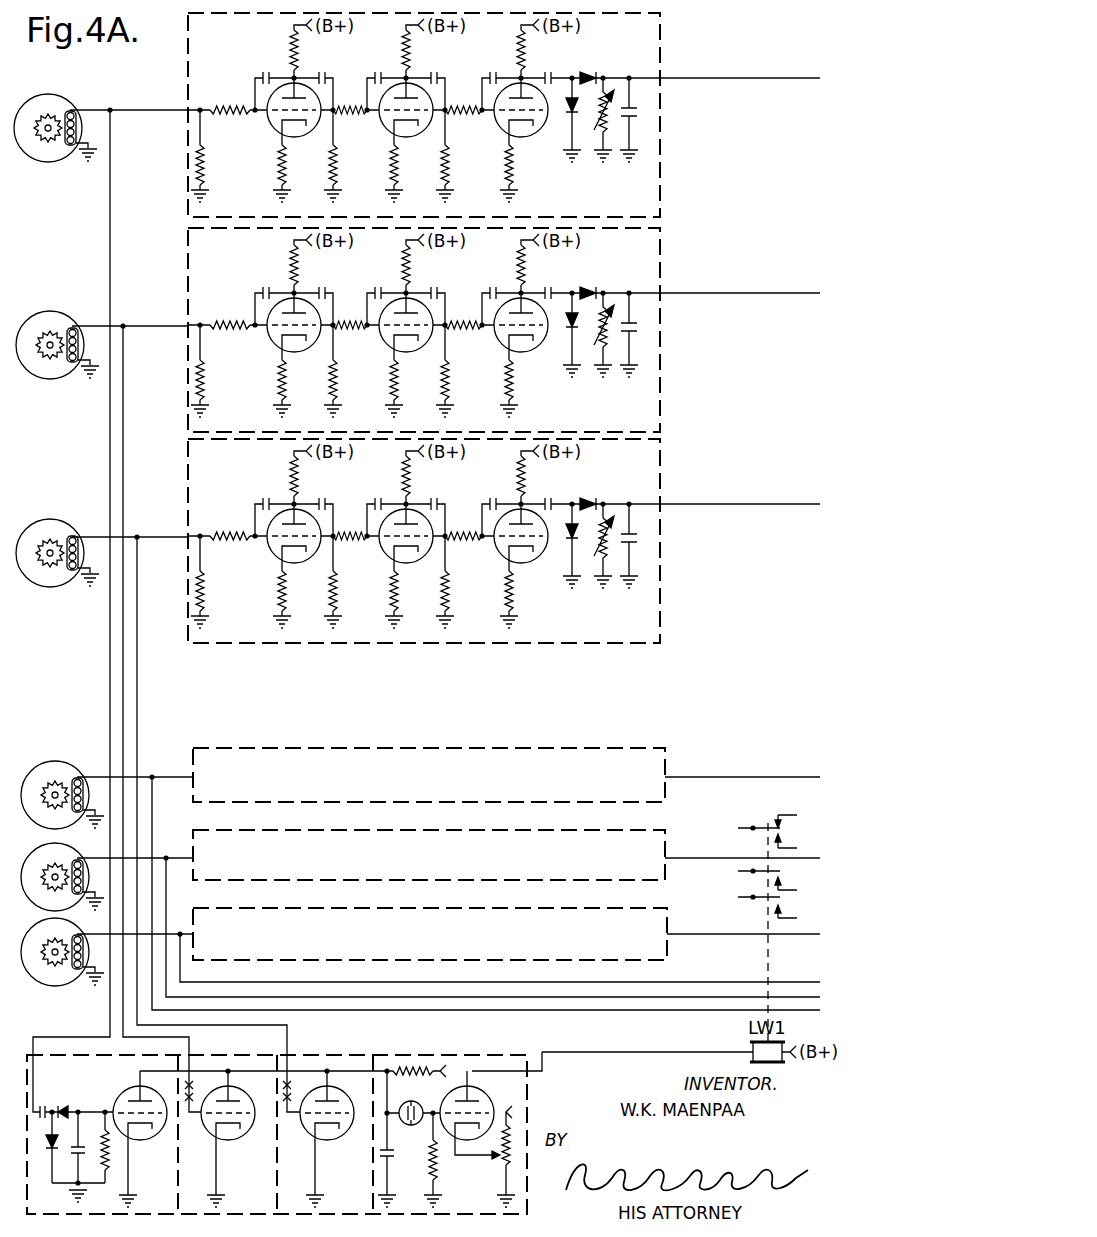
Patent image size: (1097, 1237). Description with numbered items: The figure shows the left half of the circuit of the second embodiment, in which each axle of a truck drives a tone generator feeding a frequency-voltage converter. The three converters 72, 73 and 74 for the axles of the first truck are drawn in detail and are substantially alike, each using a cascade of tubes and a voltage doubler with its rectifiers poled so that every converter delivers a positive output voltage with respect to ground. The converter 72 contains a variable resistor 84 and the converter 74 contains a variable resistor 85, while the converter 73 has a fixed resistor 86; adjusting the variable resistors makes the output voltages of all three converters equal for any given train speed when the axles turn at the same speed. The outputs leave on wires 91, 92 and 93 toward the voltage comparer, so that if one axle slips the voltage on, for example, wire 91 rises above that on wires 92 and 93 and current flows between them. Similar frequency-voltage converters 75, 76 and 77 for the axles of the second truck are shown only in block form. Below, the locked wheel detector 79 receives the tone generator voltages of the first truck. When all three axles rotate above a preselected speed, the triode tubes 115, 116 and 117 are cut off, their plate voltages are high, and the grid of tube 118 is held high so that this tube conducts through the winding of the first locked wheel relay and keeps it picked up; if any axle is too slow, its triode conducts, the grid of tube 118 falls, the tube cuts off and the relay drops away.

The frequency-voltage converter 72 is at (660, 125).
The frequency-voltage converter 73 is at (660, 352).
The frequency-voltage converter 74 is at (662, 558).
The frequency-voltage converter 75 is at (506, 775).
The frequency-voltage converter 76 is at (506, 855).
The frequency-voltage converter 77 is at (506, 934).
The locked wheel detector 79 is at (480, 1040).
The variable resistor 84 is at (616, 88).
The variable resistor 85 is at (617, 512).
The fixed resistor 86 is at (616, 302).
The wire 91 is at (700, 78).
The wire 92 is at (700, 293).
The wire 93 is at (700, 504).
The triode tube 115 is at (142, 1141).
The triode tube 116 is at (230, 1141).
The triode tube 117 is at (329, 1141).
The tube 118 is at (468, 1141).